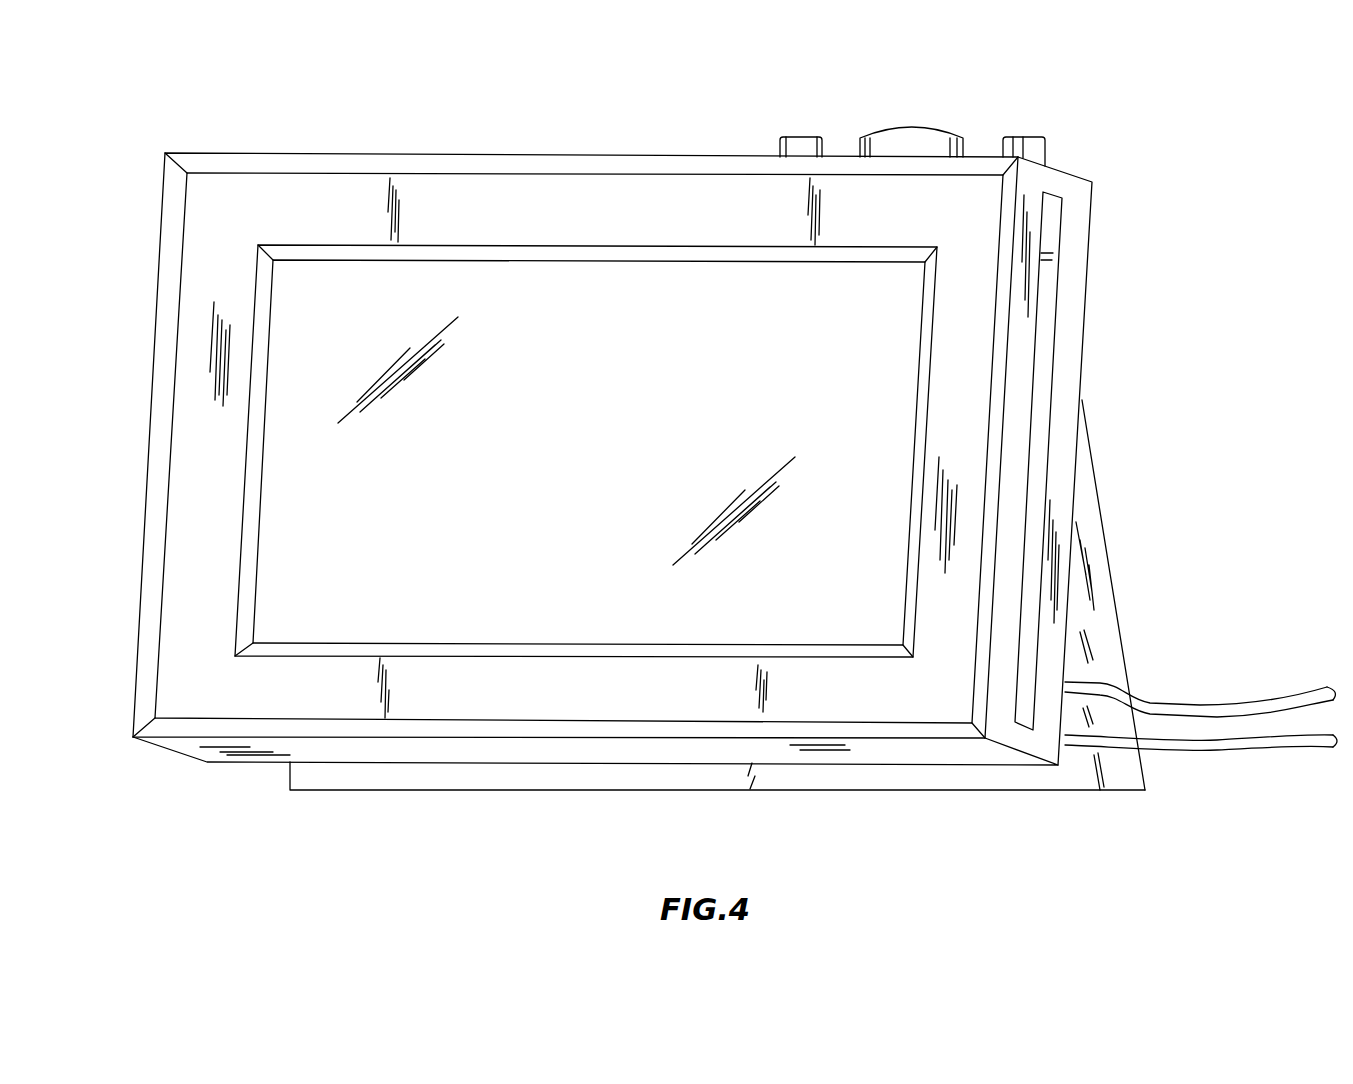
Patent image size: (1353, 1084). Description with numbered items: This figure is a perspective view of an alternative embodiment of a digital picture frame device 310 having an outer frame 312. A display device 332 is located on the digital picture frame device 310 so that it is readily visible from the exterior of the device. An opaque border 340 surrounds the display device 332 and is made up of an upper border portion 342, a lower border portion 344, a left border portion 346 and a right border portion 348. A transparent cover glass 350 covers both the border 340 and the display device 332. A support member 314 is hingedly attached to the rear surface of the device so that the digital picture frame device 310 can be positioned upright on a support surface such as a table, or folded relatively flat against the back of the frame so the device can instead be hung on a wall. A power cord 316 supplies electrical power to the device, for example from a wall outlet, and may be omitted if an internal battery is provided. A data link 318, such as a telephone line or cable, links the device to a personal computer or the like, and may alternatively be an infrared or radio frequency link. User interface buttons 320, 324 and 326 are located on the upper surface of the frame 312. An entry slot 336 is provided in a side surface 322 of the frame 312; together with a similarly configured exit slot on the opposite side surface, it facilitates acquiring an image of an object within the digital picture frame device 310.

The digital picture frame device 310 is at (1216, 141).
The outer frame 312 is at (160, 225).
The support member 314 is at (1103, 593).
The power cord 316 is at (1237, 757).
The data link 318 is at (1235, 702).
The user interface button 320 is at (913, 127).
The side surface 322 is at (1077, 234).
The user interface button 324 is at (812, 137).
The user interface button 326 is at (1037, 137).
The display device 332 is at (345, 610).
The entry slot 336 is at (1088, 291).
The opaque border 340 is at (200, 552).
The upper border portion 342 is at (555, 205).
The lower border portion 344 is at (460, 695).
The left border portion 346 is at (205, 453).
The right border portion 348 is at (963, 373).
The transparent cover glass 350 is at (585, 612).